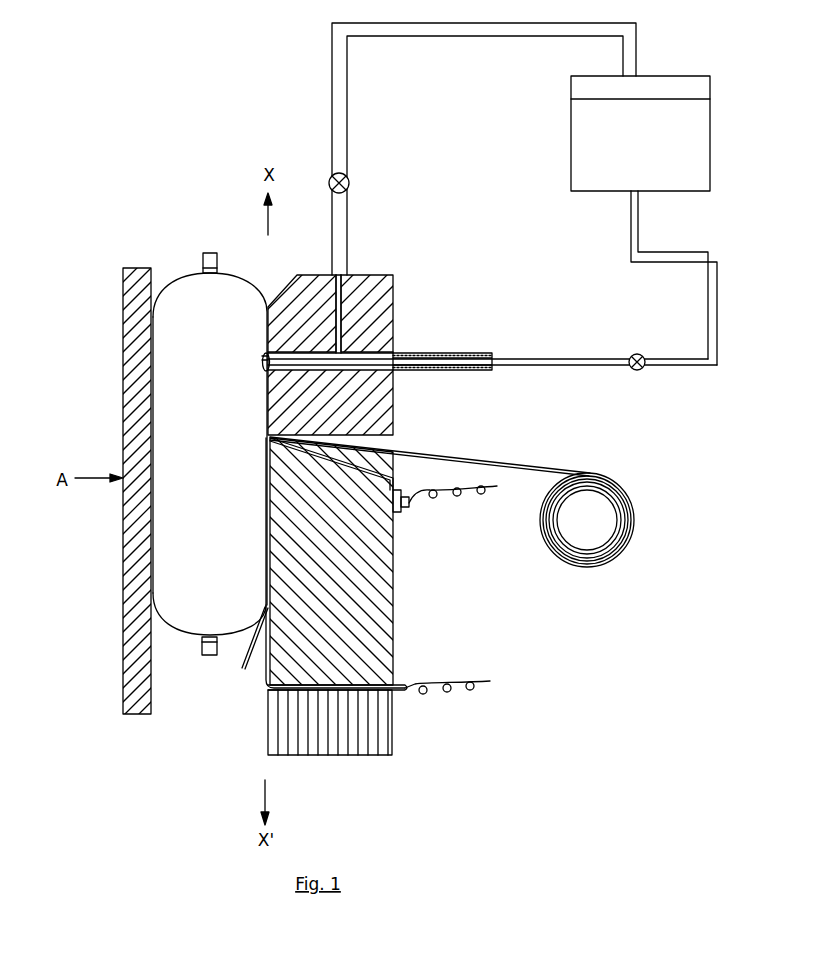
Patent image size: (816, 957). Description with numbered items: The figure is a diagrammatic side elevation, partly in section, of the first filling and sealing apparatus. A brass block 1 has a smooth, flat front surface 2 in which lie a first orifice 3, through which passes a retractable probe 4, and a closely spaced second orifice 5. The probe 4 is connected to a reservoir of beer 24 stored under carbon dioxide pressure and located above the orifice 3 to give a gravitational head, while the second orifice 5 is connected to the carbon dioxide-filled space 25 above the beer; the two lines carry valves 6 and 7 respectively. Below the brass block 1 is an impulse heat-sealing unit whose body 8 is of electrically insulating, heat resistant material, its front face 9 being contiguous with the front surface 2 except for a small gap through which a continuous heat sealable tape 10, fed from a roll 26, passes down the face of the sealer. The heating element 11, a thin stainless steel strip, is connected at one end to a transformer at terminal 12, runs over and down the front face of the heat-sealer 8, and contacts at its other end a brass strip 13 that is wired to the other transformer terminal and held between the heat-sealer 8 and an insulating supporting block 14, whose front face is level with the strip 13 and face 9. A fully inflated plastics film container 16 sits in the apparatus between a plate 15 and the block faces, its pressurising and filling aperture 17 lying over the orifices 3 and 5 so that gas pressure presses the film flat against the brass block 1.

The brass block 1 is at (390, 305).
The front surface 2 is at (266, 330).
The first orifice 3 is at (262, 364).
The retractable probe 4 is at (560, 358).
The second orifice 5 is at (262, 356).
The valve 6 is at (640, 355).
The valve 7 is at (350, 180).
The body of impulse heat-sealing unit 8 is at (380, 617).
The front face of heat-sealing unit 9 is at (266, 520).
The heat sealable tape 10 is at (447, 453).
The heating element 11 is at (365, 465).
The terminal 12 is at (401, 510).
The brass strip 13 is at (372, 693).
The supporting block 14 is at (350, 745).
The plate 15 is at (135, 582).
The plastics film container 16 is at (182, 548).
The pressurising and filling aperture 17 is at (262, 360).
The reservoir of beer 24 is at (685, 162).
The carbon dioxide-filled space 25 is at (657, 83).
The roll 26 is at (634, 522).